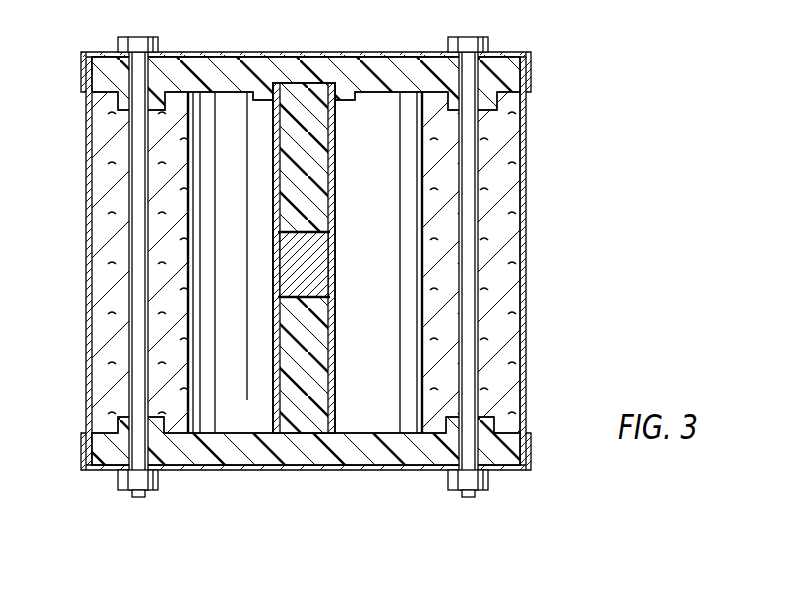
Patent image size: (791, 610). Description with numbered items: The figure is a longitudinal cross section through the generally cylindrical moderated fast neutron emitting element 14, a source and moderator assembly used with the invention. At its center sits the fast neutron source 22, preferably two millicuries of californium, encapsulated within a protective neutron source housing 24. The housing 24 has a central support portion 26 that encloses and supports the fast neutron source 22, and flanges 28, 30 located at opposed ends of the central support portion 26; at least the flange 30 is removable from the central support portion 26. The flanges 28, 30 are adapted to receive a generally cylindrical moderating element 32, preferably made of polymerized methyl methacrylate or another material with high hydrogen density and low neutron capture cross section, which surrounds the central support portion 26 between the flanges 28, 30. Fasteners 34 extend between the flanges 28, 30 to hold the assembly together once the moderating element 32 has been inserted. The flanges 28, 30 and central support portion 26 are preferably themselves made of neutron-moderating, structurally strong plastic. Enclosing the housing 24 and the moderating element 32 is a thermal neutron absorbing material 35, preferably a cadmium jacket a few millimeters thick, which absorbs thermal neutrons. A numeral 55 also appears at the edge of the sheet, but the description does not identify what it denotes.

The moderated fast neutron emitting element 14 is at (601, 91).
The fast neutron source 22 is at (318, 270).
The neutron source housing 24 is at (85, 52).
The central support portion 26 is at (320, 140).
The flange 28 is at (315, 453).
The flange 30 is at (226, 70).
The moderating element 32 is at (100, 194).
The fastener 34 is at (138, 37).
The thermal neutron absorbing material 35 is at (527, 170).
The element 55 is at (681, 7).